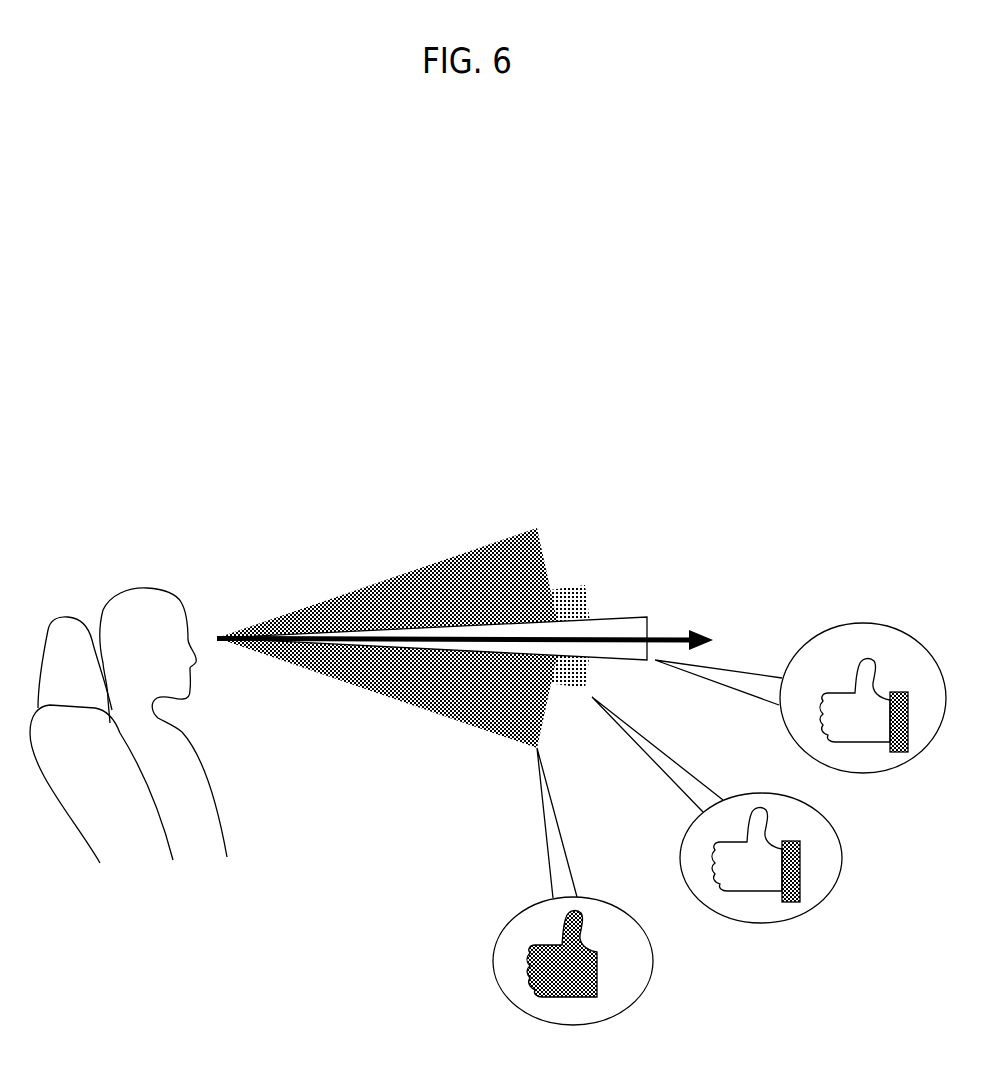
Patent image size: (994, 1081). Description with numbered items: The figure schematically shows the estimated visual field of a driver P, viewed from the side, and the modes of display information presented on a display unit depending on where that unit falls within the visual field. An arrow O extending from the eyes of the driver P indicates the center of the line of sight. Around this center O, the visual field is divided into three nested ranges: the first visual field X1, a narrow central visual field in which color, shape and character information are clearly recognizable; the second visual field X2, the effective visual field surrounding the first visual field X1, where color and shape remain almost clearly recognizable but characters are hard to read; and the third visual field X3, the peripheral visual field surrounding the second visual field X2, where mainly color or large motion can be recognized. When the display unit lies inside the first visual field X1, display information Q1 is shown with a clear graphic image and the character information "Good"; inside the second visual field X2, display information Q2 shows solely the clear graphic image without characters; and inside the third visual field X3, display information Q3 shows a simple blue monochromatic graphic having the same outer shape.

The driver P is at (147, 577).
The first visual field X1 is at (633, 627).
The second visual field X2 is at (573, 600).
The third visual field X3 is at (478, 548).
The center of the line of sight O is at (682, 637).
The display information Q1 is at (898, 677).
The display information Q2 is at (810, 877).
The display information Q3 is at (605, 982).